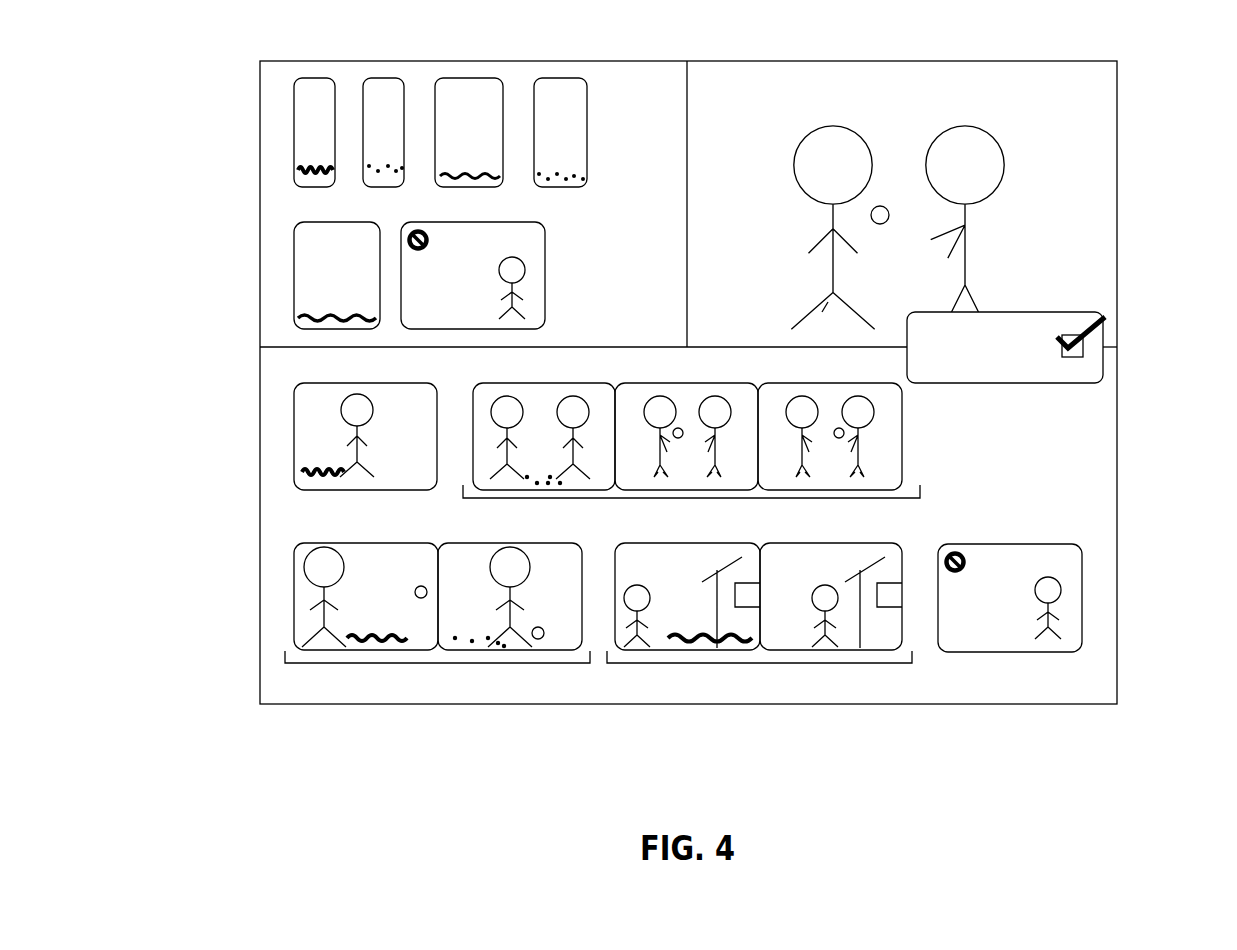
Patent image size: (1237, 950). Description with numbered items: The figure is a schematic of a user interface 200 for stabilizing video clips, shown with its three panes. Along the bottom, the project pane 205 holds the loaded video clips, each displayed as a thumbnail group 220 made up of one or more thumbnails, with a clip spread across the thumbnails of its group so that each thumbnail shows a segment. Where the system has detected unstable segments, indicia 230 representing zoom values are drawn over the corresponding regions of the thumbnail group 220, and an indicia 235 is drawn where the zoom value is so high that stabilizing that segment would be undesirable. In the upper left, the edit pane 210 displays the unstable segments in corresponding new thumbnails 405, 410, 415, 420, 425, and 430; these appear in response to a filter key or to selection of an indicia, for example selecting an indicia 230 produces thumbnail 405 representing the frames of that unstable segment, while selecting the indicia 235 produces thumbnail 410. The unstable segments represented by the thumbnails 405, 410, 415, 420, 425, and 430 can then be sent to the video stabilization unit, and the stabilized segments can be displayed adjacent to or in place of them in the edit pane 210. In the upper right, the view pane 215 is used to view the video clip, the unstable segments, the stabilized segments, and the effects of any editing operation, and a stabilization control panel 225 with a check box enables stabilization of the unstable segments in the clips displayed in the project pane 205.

The user interface 200 is at (1117, 97).
The project pane 205 is at (1082, 453).
The edit pane 210 is at (260, 329).
The view pane 215 is at (760, 61).
The thumbnail group 220 is at (350, 491).
The stabilization control panel 225 is at (1010, 312).
The indicia 230 is at (308, 467).
The indicia 235 is at (965, 565).
The thumbnail 405 is at (294, 276).
The thumbnail 410 is at (402, 250).
The thumbnail 415 is at (300, 168).
The thumbnail 420 is at (363, 131).
The thumbnail 425 is at (435, 97).
The thumbnail 430 is at (563, 78).